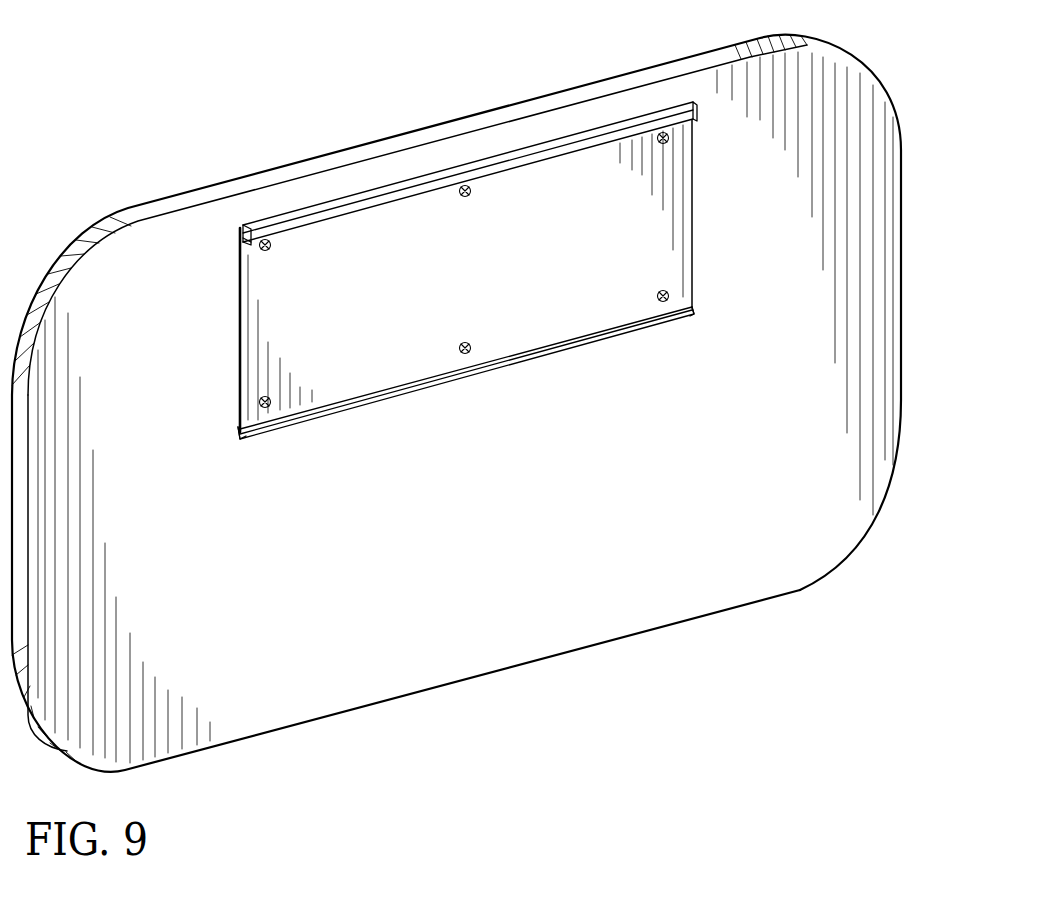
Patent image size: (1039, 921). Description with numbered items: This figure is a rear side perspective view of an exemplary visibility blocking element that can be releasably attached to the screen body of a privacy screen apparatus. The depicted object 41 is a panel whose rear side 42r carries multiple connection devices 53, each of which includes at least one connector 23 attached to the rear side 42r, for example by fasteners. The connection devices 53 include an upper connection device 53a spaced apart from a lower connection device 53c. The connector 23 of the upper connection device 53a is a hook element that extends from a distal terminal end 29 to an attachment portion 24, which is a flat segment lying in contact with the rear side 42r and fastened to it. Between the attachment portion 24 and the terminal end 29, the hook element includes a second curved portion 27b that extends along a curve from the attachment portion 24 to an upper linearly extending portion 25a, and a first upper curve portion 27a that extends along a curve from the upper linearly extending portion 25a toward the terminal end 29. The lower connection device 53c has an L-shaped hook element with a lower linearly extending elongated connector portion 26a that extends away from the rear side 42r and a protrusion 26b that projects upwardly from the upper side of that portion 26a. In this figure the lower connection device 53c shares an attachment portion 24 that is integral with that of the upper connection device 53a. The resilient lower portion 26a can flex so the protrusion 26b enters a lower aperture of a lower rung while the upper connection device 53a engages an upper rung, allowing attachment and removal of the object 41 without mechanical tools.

The connector 23 is at (467, 226).
The attachment portion 24 is at (653, 218).
The upper linearly extending portion 25a is at (247, 228).
The lower linearly extending elongated connector portion 26a is at (240, 434).
The protrusion 26b is at (706, 302).
The first upper curve portion 27a is at (697, 102).
The second curved portion 27b is at (243, 240).
The terminal end 29 is at (236, 241).
The object 41 is at (808, 608).
The rear side 42r is at (803, 510).
The connection device 53 is at (447, 128).
The upper connection device 53a is at (513, 145).
The lower connection device 53c is at (467, 346).